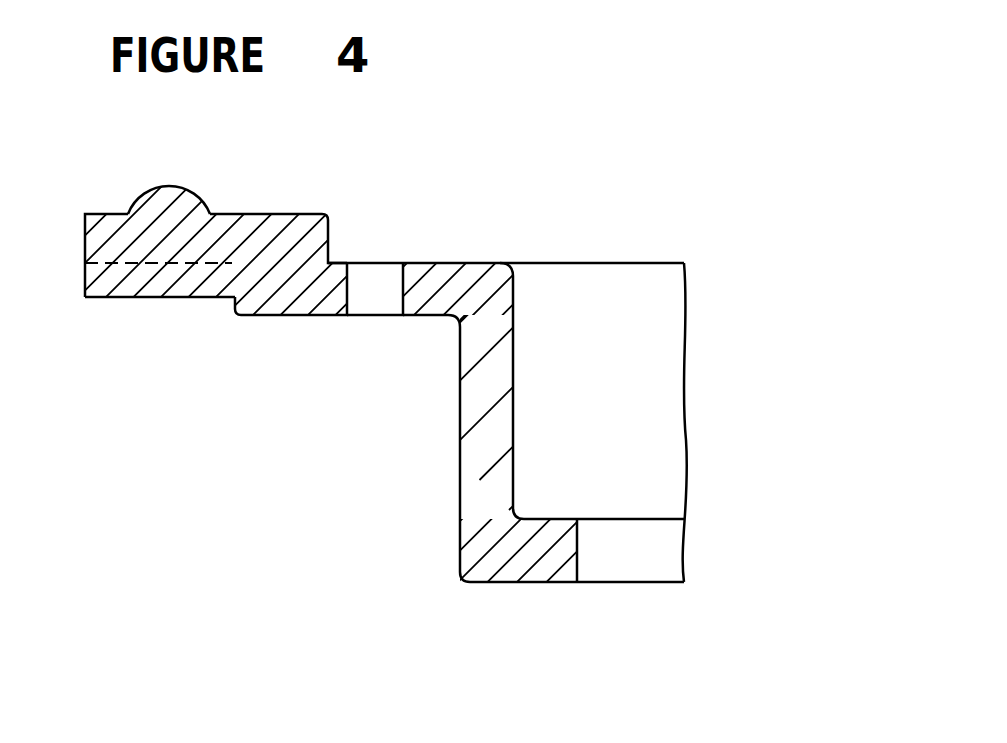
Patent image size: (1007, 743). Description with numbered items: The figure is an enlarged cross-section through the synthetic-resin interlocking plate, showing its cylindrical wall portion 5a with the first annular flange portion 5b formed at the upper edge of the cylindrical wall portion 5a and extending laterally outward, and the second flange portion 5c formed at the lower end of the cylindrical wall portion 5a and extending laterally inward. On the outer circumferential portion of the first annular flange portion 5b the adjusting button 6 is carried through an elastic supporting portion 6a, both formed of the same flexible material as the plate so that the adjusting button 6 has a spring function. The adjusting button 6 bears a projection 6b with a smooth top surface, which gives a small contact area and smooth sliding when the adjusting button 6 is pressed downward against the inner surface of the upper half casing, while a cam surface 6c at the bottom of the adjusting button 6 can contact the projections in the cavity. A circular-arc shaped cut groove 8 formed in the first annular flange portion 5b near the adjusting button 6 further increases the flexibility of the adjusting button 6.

The adjusting button 6 is at (108, 213).
The supporting portion 6a is at (285, 272).
The projection 6b is at (197, 194).
The cam surface 6c is at (146, 300).
The cut groove 8 is at (373, 288).
The cylindrical wall portion 5a is at (459, 463).
The first annular flange portion 5b is at (417, 315).
The second flange portion 5c is at (517, 580).